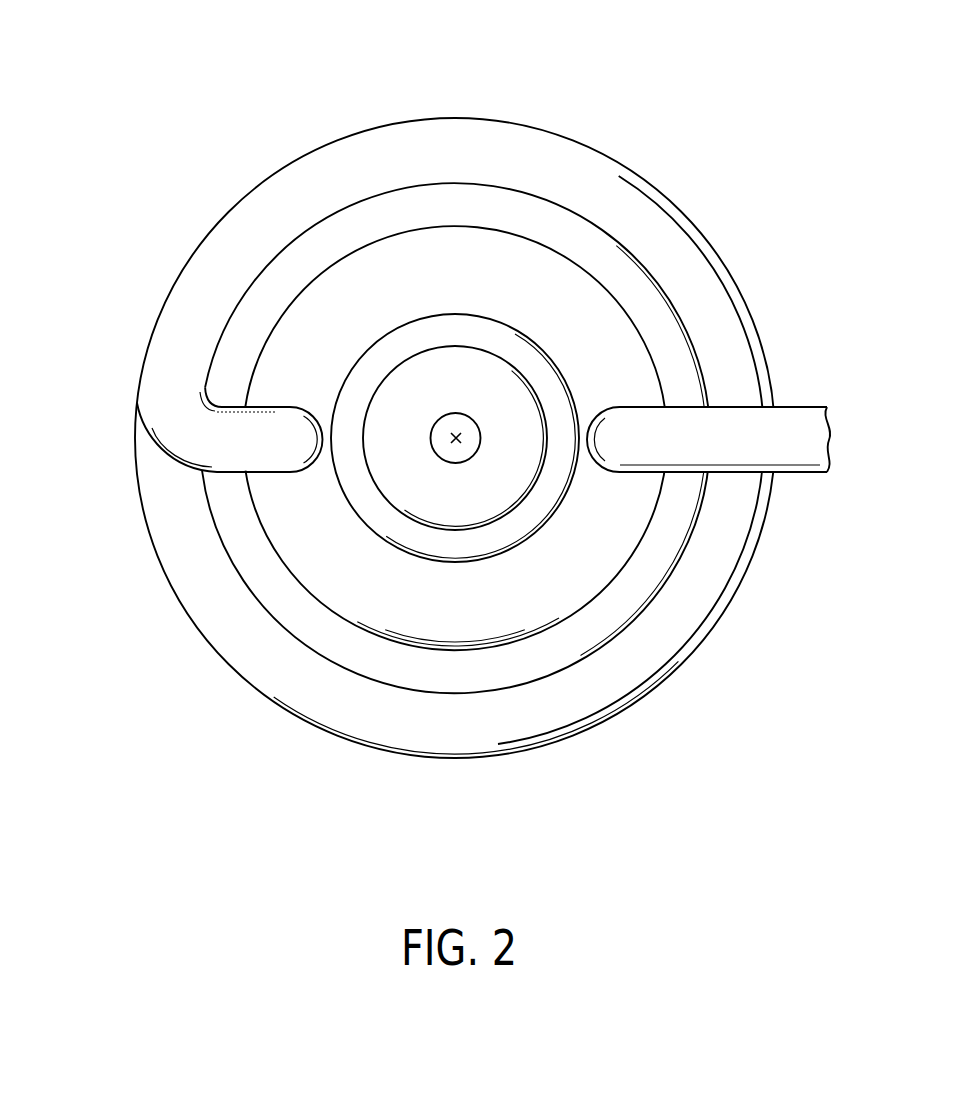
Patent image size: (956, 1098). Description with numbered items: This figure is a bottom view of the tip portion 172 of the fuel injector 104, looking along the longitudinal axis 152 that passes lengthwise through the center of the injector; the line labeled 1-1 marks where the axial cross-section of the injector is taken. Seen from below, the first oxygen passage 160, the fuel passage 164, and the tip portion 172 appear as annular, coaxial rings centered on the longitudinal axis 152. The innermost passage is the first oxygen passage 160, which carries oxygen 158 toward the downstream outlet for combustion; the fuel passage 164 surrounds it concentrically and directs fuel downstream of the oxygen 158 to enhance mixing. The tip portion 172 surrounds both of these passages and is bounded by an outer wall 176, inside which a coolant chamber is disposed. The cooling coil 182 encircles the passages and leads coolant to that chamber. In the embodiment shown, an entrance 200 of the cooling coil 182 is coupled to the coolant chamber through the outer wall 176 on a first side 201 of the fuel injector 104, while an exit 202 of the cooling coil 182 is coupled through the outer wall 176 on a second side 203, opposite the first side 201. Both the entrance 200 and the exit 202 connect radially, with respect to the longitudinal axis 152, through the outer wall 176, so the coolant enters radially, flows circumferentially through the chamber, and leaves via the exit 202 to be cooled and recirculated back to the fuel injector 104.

The fuel injector 104 is at (683, 66).
The longitudinal axis 152 is at (457, 413).
The oxygen 158 is at (433, 448).
The first oxygen passage 160 is at (415, 480).
The fuel passage 164 is at (518, 527).
The tip portion 172 is at (617, 513).
The outer wall 176 is at (303, 347).
The cooling coil 182 is at (660, 236).
The entrance 200 is at (277, 473).
The first side 201 is at (127, 392).
The exit 202 is at (627, 407).
The second side 203 is at (802, 392).
The line 1- 1 is at (455, 108).